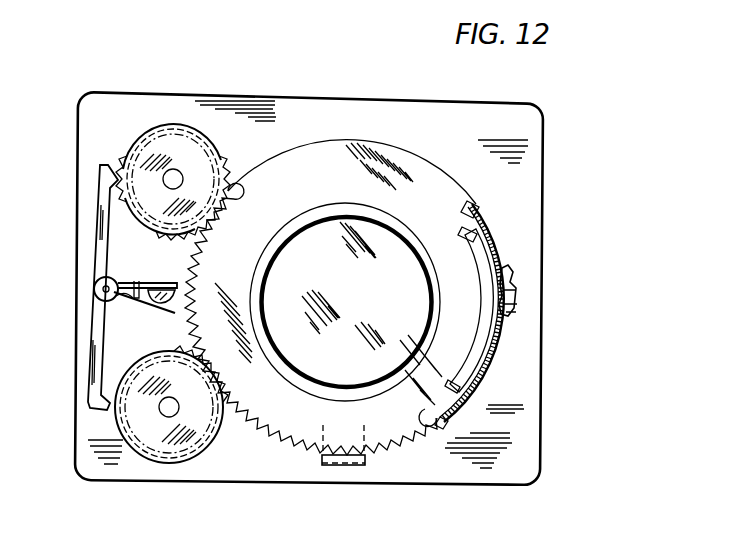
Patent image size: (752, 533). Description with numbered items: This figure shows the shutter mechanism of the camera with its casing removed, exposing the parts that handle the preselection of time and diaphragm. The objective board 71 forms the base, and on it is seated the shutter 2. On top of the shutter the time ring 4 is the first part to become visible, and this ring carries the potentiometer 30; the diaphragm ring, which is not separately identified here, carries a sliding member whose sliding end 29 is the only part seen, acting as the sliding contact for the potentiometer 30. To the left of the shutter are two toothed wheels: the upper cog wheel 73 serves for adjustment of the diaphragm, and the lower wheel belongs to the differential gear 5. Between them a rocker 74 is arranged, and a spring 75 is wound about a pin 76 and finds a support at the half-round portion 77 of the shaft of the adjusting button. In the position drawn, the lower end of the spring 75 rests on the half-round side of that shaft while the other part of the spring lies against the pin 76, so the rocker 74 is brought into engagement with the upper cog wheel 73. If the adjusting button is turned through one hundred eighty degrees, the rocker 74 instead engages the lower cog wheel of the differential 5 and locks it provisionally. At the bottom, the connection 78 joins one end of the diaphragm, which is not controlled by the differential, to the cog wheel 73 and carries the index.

The shutter 2 is at (333, 215).
The time ring 4 is at (440, 178).
The differential gear 5 is at (206, 438).
The sliding contact 29 is at (512, 298).
The potentiometer 30 is at (484, 387).
The objective board 71 is at (532, 207).
The cog wheel for adjustment of the diaphragm 73 is at (200, 152).
The rocker 74 is at (96, 236).
The spring 75 is at (149, 306).
The pin 76 is at (137, 282).
The half-round portion 77 is at (163, 290).
The connection 78 is at (340, 468).